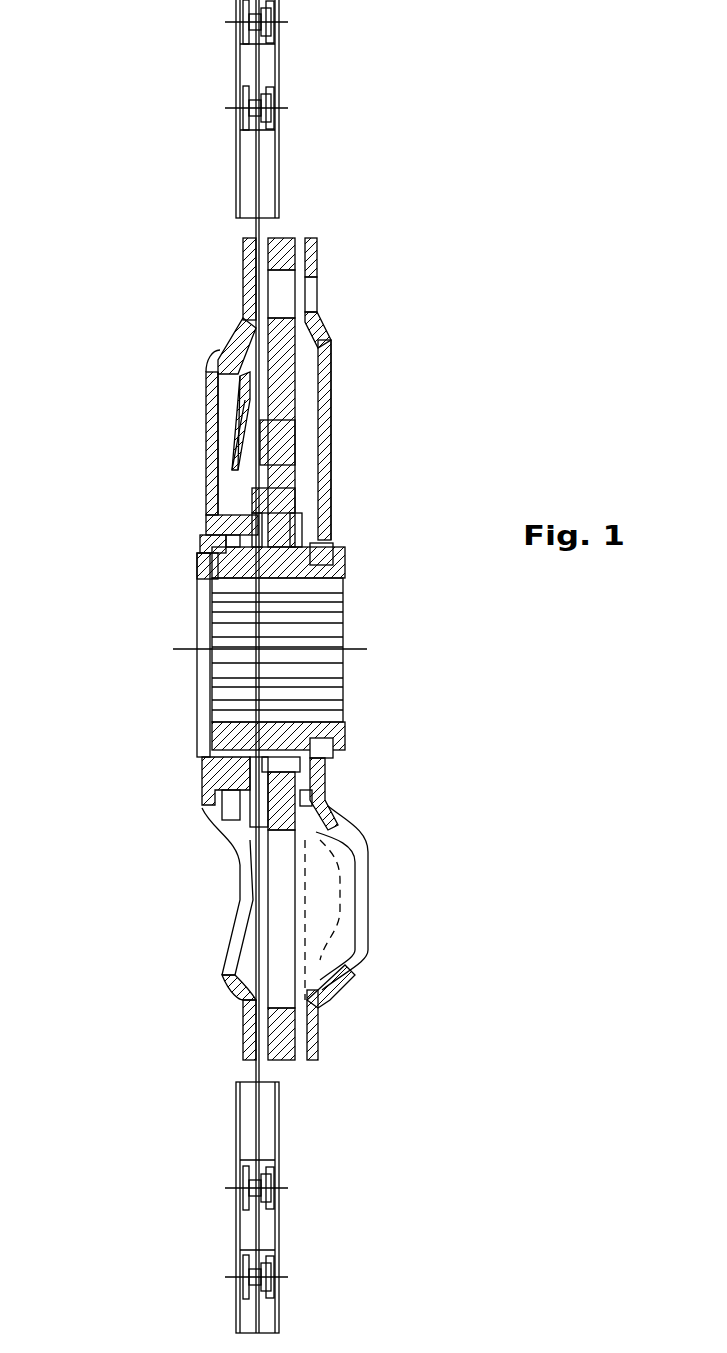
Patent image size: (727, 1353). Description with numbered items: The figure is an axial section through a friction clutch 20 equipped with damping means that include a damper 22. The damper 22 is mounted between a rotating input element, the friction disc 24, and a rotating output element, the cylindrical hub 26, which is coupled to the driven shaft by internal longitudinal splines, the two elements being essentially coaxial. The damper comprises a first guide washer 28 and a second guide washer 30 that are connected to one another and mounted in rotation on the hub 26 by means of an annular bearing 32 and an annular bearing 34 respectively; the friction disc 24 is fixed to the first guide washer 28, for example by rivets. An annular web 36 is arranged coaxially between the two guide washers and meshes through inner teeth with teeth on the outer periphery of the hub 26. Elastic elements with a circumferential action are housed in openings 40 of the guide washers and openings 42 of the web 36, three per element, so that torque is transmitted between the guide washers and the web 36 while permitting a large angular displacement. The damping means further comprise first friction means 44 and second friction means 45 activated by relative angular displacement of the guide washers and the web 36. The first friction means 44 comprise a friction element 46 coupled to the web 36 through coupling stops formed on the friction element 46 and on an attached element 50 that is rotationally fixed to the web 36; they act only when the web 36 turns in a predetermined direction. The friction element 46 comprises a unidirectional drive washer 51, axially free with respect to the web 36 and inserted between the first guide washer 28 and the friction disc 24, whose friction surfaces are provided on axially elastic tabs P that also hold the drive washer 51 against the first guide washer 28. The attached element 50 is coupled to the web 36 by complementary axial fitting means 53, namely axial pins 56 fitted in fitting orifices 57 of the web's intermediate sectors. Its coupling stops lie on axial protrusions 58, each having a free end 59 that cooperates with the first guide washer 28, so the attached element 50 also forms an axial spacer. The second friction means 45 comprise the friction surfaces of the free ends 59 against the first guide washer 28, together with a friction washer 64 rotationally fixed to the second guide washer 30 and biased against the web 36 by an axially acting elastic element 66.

The friction clutch 20 is at (143, 135).
The damper 22 is at (227, 858).
The friction disc 24 is at (288, 154).
The cylindrical hub 26 is at (330, 570).
The first guide washer 28 is at (243, 259).
The second guide washer 30 is at (318, 260).
The annular bearing 32 is at (200, 553).
The annular bearing 34 is at (330, 553).
The annular web 36 is at (284, 240).
The openings 40 is at (221, 978).
The openings 42 is at (340, 822).
The first friction means 44 is at (197, 490).
The second friction means 45 is at (332, 517).
The friction element 46 is at (236, 372).
The attached element 50 is at (290, 498).
The unidirectional drive washer 51 is at (208, 394).
The complementary axial fitting means 53 is at (320, 392).
The axial pins 56 is at (240, 420).
The fitting orifices 57 is at (300, 455).
The axial protrusions 58 is at (206, 545).
The free end 59 is at (206, 525).
The friction washer 64 is at (325, 776).
The elastic element 66 is at (322, 802).
The tabs P is at (250, 402).